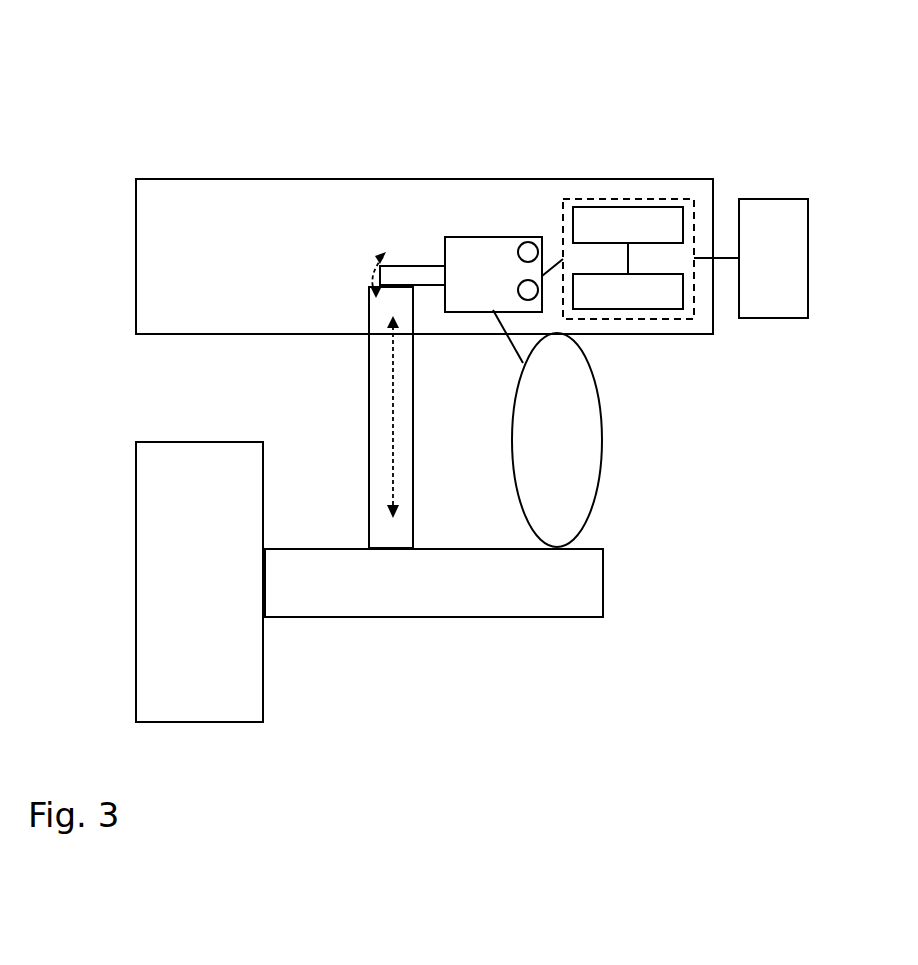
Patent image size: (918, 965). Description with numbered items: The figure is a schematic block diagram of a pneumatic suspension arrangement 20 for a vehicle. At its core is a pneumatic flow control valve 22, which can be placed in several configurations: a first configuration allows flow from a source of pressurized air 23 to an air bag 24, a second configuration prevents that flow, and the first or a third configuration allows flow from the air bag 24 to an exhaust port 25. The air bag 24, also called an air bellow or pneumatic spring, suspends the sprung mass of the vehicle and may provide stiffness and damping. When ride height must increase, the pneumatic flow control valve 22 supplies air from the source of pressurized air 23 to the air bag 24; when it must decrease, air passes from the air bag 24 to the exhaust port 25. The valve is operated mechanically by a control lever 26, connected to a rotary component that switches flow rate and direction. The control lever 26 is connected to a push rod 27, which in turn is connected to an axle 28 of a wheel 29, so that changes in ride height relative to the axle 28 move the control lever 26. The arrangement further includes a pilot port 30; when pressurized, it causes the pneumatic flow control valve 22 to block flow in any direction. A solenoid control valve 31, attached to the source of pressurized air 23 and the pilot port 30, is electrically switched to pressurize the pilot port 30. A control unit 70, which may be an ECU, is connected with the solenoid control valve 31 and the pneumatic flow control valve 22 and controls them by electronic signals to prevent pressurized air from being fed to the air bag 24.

The pneumatic suspension arrangement 20 is at (145, 106).
The pneumatic flow control valve 22 is at (456, 241).
The source of pressurized air 23 is at (627, 207).
The air bag 24 is at (598, 470).
The exhaust port 25 is at (523, 243).
The control lever 26 is at (390, 267).
The push rod 27 is at (370, 462).
The axle 28 is at (340, 568).
The wheel 29 is at (180, 455).
The pilot port 30 is at (519, 289).
The solenoid control valve 31 is at (662, 309).
The control unit 70 is at (769, 318).